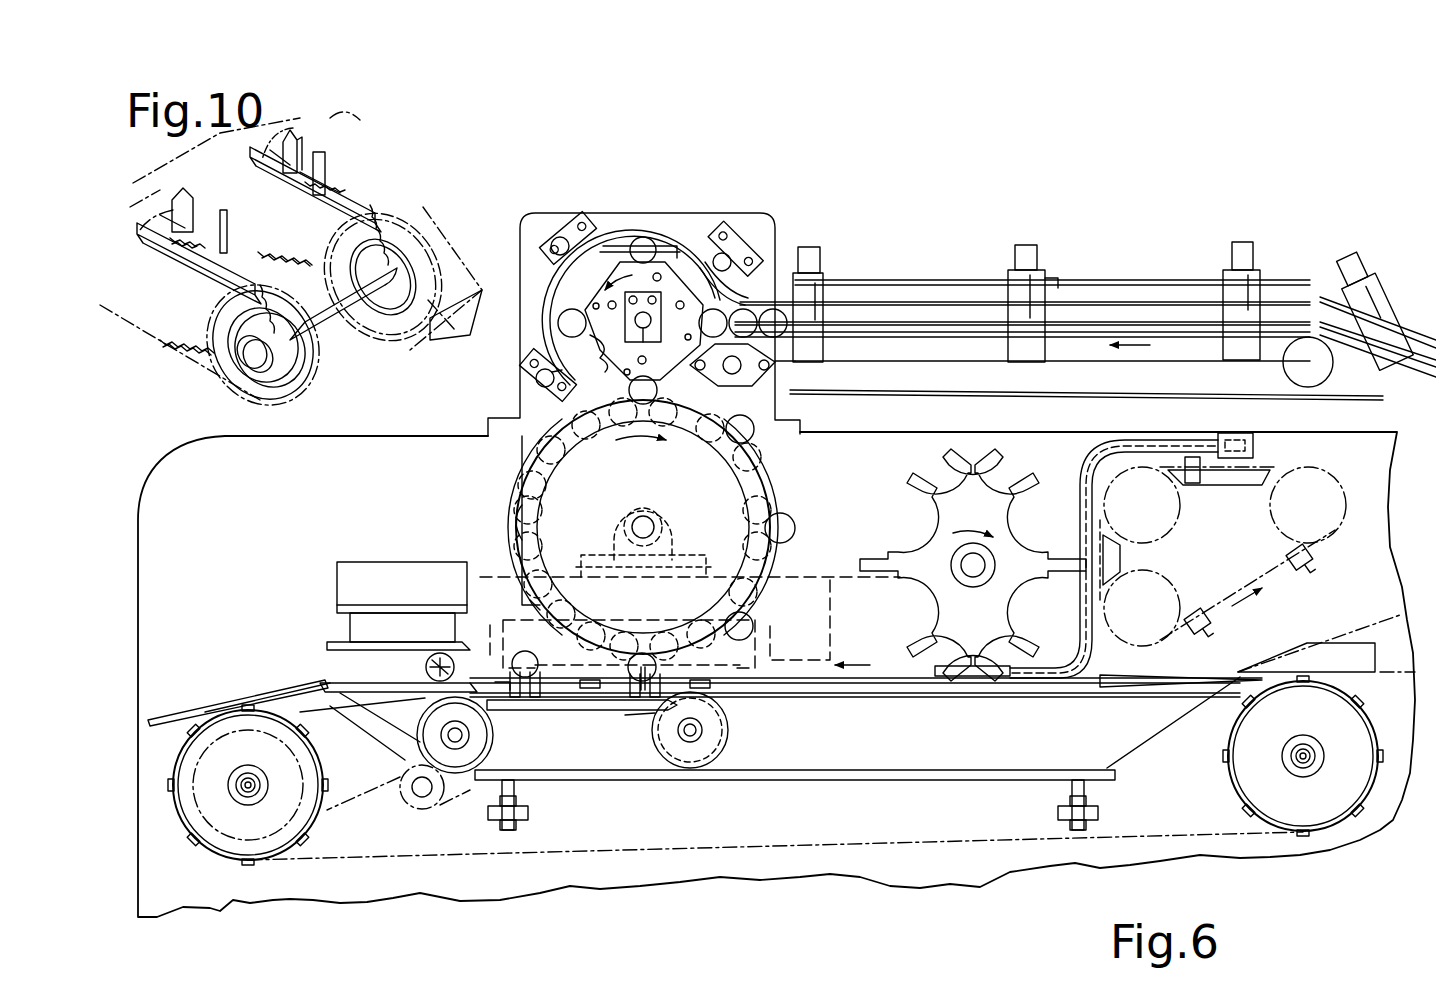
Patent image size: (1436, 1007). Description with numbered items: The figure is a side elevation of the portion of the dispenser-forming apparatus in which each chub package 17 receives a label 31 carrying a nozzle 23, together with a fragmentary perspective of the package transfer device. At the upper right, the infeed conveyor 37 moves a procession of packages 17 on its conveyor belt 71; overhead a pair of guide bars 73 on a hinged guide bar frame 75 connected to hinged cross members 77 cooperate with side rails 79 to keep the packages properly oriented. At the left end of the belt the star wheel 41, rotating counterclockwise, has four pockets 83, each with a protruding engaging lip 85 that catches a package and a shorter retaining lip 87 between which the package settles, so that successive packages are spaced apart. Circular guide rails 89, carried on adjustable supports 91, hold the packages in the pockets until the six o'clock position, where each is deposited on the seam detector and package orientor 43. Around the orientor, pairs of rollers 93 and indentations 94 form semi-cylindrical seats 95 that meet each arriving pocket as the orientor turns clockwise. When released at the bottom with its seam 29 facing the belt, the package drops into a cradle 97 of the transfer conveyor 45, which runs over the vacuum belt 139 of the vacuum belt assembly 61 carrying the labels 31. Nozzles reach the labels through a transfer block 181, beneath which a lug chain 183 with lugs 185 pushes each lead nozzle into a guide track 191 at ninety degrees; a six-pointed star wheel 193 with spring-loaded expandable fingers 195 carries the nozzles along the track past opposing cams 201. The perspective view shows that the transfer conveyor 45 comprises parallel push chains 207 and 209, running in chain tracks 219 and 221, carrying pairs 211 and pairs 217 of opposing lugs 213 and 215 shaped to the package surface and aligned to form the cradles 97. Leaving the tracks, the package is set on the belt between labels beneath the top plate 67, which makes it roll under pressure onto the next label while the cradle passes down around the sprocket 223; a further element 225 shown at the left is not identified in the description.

In FIG. 10, the chub package 17 is at (300, 150).
In FIG. 6, the chub package 17 is at (740, 305).
In FIG. 6, the nozzle 23 is at (410, 730).
In FIG. 6, the seam 29 is at (646, 664).
In FIG. 6, the label 31 is at (425, 682).
In FIG. 6, the infeed conveyor 37 is at (1310, 260).
In FIG. 6, the star wheel 41 is at (600, 295).
In FIG. 6, the seam detector and package orientor 43 is at (640, 480).
In FIG. 10, the transfer conveyor 45 is at (388, 154).
In FIG. 6, the transfer conveyor 45 is at (558, 724).
In FIG. 6, the vacuum belt assembly 61 is at (935, 792).
In FIG. 6, the top plate 67 is at (340, 650).
In FIG. 6, the conveyor belt 71 is at (1200, 397).
In FIG. 6, the guide bars 73 is at (880, 300).
In FIG. 6, the guide bar frame 75 is at (948, 290).
In FIG. 6, the hinged cross members 77 is at (1030, 245).
In FIG. 6, the side rails 79 is at (945, 328).
In FIG. 6, the pocket 83 is at (712, 380).
In FIG. 6, the engaging lip 85 is at (580, 300).
In FIG. 6, the retaining lip 87 is at (596, 352).
In FIG. 6, the guide rails 89 is at (618, 240).
In FIG. 6, the supports 91 is at (735, 240).
In FIG. 6, the rollers 93 is at (712, 455).
In FIG. 6, the indentations 94 is at (512, 524).
In FIG. 6, the semi-cylindrical seat 95 is at (764, 530).
In FIG. 6, the cradle 97 is at (640, 708).
In FIG. 10, the vacuum belt 139 is at (462, 300).
In FIG. 6, the vacuum belt 139 is at (1100, 682).
In FIG. 6, the transfer block 181 is at (1255, 449).
In FIG. 6, the lug chain 183 is at (1288, 580).
In FIG. 6, the lug 185 is at (1192, 640).
In FIG. 6, the guide track 191 is at (1075, 532).
In FIG. 6, the star wheel 193 is at (915, 540).
In FIG. 6, the expandable finger 195 is at (1022, 477).
In FIG. 6, the opposing cams 201 is at (960, 678).
In FIG. 10, the push chain 207 is at (182, 348).
In FIG. 10, the push chain 209 is at (298, 262).
In FIG. 10, the pairs of opposing lugs 211 is at (178, 214).
In FIG. 10, the lug 213 is at (300, 130).
In FIG. 10, the lug 215 is at (320, 172).
In FIG. 10, the pairs of opposing lugs 217 is at (287, 163).
In FIG. 10, the chain track 219 is at (165, 248).
In FIG. 6, the chain track 219 is at (598, 710).
In FIG. 10, the chain track 221 is at (330, 190).
In FIG. 6, the sprocket 223 is at (402, 780).
In FIG. 6, the guide plate 225 is at (175, 710).